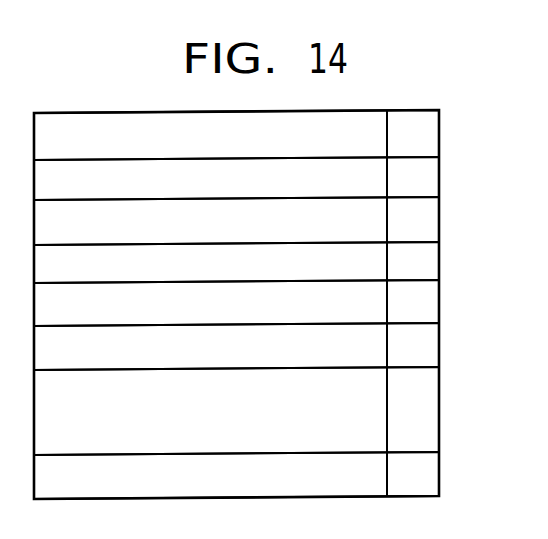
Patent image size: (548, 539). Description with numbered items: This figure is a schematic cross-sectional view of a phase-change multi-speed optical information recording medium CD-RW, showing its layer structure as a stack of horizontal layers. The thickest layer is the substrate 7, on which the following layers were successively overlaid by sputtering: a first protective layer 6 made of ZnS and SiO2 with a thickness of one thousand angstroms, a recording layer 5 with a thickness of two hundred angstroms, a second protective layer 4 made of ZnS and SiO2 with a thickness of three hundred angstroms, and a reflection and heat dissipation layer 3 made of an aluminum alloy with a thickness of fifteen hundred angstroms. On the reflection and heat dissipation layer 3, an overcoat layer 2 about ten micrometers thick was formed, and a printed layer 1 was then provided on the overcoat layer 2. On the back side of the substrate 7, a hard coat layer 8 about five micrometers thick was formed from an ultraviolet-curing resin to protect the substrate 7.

The printed layer 1 is at (368, 139).
The overcoat layer 2 is at (368, 180).
The reflection and heat dissipation layer 3 is at (368, 225).
The second protective layer 4 is at (375, 260).
The recording layer 5 is at (368, 309).
The first protective layer 6 is at (373, 346).
The substrate 7 is at (372, 404).
The hard coat layer 8 is at (368, 468).